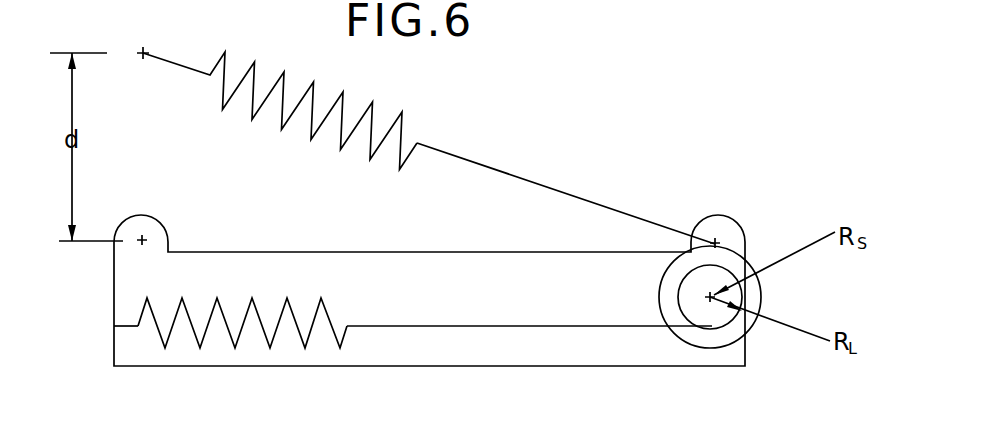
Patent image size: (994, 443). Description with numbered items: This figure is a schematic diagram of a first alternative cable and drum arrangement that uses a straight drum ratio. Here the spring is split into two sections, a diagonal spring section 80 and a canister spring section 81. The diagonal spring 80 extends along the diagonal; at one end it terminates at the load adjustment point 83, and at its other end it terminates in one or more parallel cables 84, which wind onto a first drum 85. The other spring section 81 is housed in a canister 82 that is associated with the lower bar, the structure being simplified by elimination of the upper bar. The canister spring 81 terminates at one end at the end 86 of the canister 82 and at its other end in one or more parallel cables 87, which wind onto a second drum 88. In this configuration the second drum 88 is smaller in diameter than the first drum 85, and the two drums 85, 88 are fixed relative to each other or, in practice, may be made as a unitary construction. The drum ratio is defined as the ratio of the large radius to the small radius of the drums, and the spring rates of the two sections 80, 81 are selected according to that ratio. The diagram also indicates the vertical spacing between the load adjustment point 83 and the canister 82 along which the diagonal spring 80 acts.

The diagonal spring section 80 is at (402, 112).
The canister spring section 81 is at (252, 298).
The canister 82 is at (332, 357).
The load adjustment point 83 is at (142, 58).
The parallel cables 84 is at (522, 182).
The first drum 85 is at (756, 290).
The canister end 86 is at (114, 327).
The parallel cables 87 is at (495, 325).
The second drum 88 is at (718, 318).